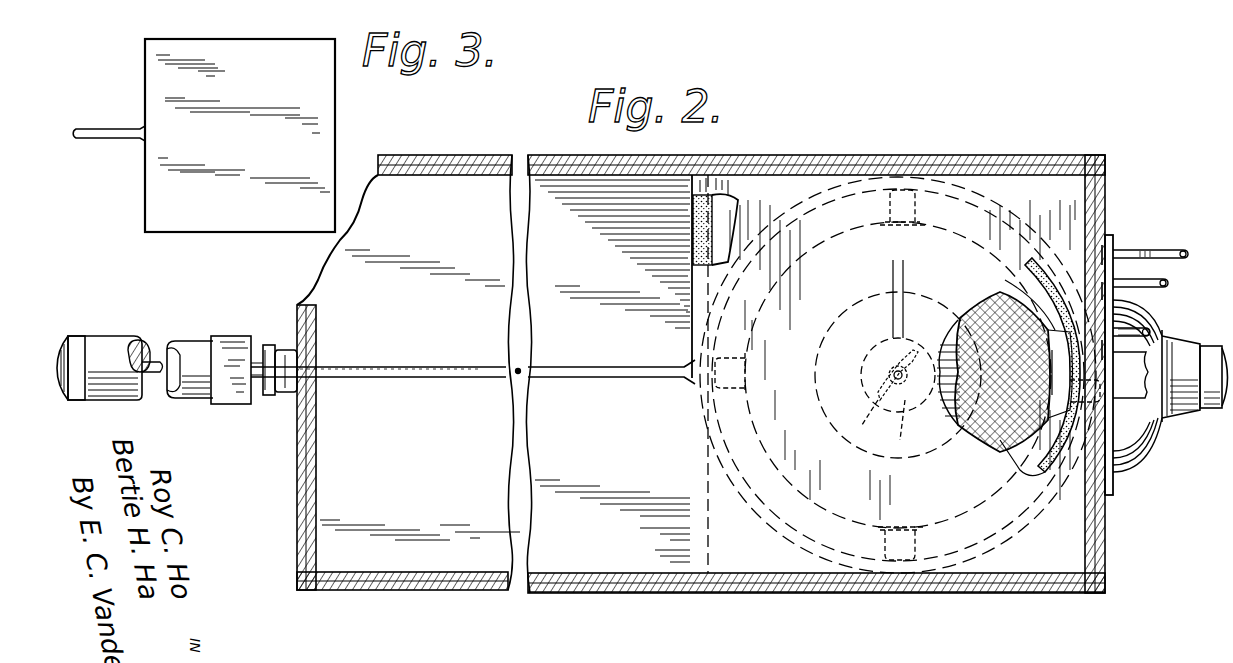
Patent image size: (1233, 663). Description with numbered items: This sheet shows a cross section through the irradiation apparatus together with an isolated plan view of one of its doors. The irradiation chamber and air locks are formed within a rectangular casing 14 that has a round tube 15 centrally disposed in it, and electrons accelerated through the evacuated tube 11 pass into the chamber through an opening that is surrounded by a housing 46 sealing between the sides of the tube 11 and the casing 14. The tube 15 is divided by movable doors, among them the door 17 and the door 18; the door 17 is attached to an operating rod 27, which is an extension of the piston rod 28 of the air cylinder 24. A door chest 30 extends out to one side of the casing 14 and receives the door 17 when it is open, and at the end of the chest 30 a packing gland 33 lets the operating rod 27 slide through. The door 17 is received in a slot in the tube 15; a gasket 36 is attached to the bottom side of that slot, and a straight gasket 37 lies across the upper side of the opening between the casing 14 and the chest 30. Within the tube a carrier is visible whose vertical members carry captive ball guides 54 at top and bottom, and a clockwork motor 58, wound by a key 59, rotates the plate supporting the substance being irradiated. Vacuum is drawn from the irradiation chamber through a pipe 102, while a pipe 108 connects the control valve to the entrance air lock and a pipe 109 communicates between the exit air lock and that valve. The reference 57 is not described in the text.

In FIG. 2, the evacuated tube 11 is at (1215, 413).
In FIG. 2, the rectangular casing 14 is at (1068, 163).
In FIG. 2, the round tube 15 is at (1038, 292).
In FIG. 3, the door 17 is at (240, 135).
In FIG. 2, the door 17 is at (628, 232).
In FIG. 2, the door 18 is at (1040, 500).
In FIG. 2, the air cylinder 24 is at (193, 400).
In FIG. 3, the operating rod 27 is at (113, 132).
In FIG. 2, the operating rod 27 is at (548, 367).
In FIG. 2, the piston rod 28 is at (153, 352).
In FIG. 2, the door chest 30 is at (594, 592).
In FIG. 2, the packing gland 33 is at (272, 340).
In FIG. 2, the gasket 36 is at (1112, 240).
In FIG. 2, the straight gasket 37 is at (735, 195).
In FIG. 2, the housing 46 is at (1158, 306).
In FIG. 2, the captive ball guides 54 is at (888, 226).
In FIG. 2, the speaker frame 57 is at (960, 420).
In FIG. 2, the clockwork motor 58 is at (890, 445).
In FIG. 2, the key 59 is at (855, 420).
In FIG. 2, the pipe 102 is at (1170, 280).
In FIG. 2, the pipe 108 is at (1170, 250).
In FIG. 2, the pipe 109 is at (1155, 330).